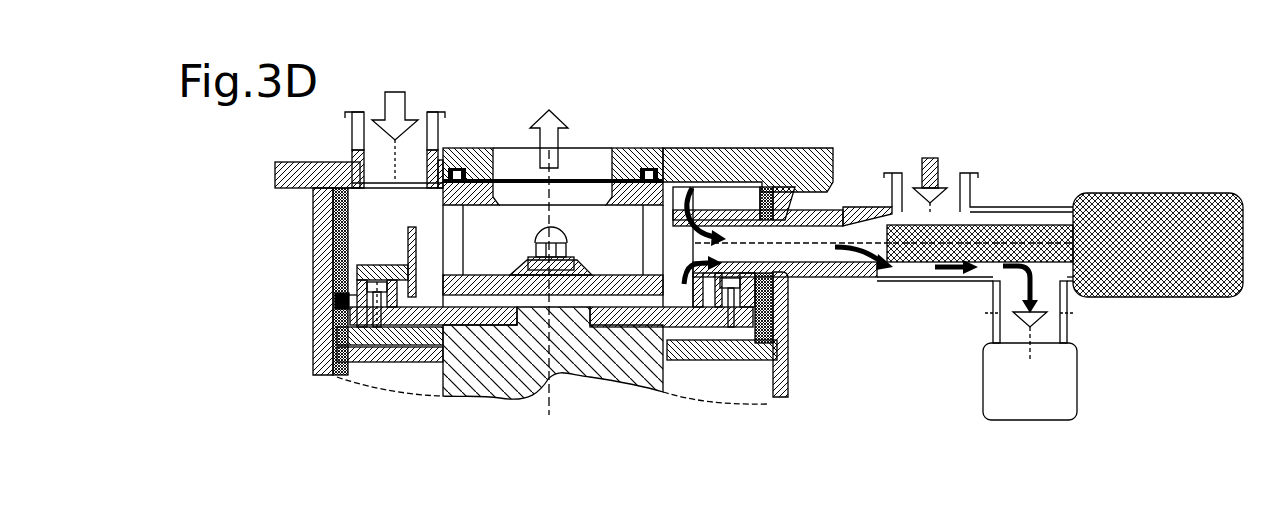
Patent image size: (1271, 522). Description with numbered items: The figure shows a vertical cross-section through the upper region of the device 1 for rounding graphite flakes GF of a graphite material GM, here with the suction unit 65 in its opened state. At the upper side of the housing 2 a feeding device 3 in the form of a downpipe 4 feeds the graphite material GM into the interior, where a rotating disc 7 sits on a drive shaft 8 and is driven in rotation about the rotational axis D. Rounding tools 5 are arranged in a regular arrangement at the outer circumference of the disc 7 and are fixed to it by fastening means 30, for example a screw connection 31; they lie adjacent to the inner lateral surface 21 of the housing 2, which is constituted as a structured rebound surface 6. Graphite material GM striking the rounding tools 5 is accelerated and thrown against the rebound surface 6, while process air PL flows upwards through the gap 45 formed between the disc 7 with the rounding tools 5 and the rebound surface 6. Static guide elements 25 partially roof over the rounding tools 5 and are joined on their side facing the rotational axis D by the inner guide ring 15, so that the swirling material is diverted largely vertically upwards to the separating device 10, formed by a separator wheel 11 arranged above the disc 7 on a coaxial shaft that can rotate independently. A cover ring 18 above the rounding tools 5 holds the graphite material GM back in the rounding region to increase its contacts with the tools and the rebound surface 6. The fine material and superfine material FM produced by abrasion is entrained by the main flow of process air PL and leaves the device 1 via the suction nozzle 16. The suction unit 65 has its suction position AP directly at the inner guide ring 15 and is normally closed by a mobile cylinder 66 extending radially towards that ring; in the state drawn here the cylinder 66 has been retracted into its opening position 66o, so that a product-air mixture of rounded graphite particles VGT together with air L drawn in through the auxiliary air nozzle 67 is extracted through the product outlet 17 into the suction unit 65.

The device 1 is at (931, 423).
The housing 2 is at (777, 382).
The feeding device 3 is at (475, 140).
The downpipe 4 is at (426, 150).
The rounding tools 5 is at (365, 295).
The rebound surface 6 is at (355, 336).
The disc 7 is at (330, 377).
The drive shaft 8 is at (528, 384).
The separating device 10 is at (744, 175).
The separator wheel 11 is at (656, 231).
The inner guide ring 15 is at (410, 300).
The suction nozzle 16 is at (600, 160).
The product outlet 17 is at (1052, 328).
The cover ring 18 is at (370, 268).
The inner lateral surface 21 is at (757, 318).
The guide element 25 is at (350, 243).
The fastening means 30 is at (367, 375).
The screw connection 31 is at (372, 330).
The gap 45 is at (338, 301).
The suction unit 65 is at (1036, 410).
The mobile cylinder 66 is at (1170, 213).
The opening position 66o is at (1152, 250).
The auxiliary air nozzle 67 is at (960, 177).
The process air PL is at (410, 233).
The graphite material GM is at (396, 124).
The graphite flakes GF is at (396, 124).
The fine material and/or superfine material FM is at (552, 127).
The rotational axis D is at (545, 298).
The suction position AP is at (673, 190).
The rounded graphite particles VGT is at (801, 247).
The air L is at (922, 157).